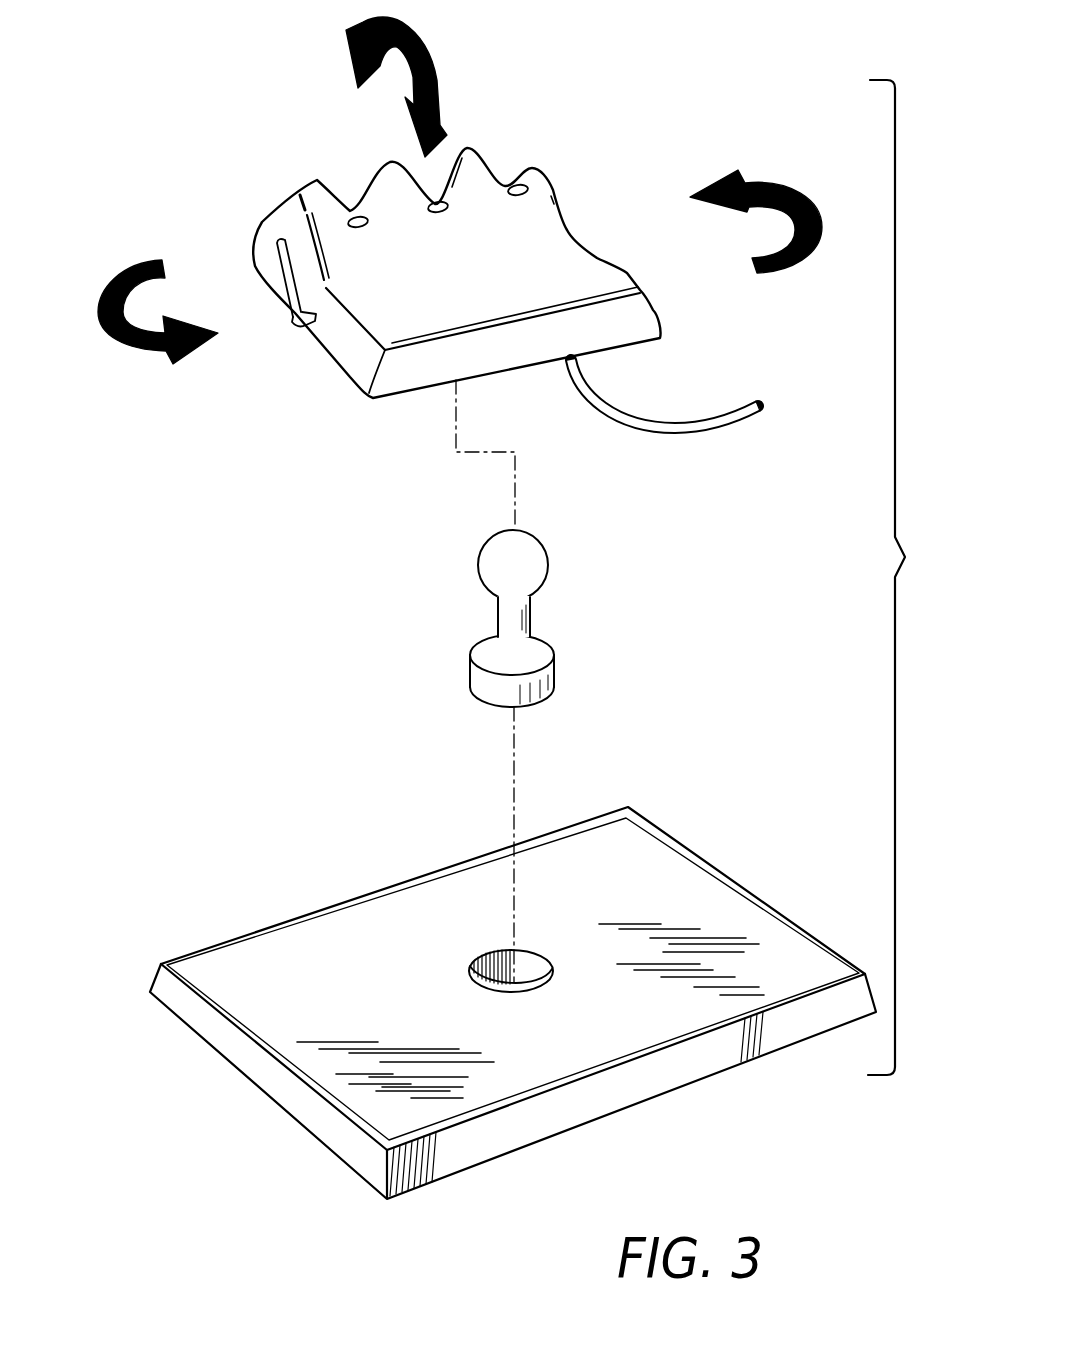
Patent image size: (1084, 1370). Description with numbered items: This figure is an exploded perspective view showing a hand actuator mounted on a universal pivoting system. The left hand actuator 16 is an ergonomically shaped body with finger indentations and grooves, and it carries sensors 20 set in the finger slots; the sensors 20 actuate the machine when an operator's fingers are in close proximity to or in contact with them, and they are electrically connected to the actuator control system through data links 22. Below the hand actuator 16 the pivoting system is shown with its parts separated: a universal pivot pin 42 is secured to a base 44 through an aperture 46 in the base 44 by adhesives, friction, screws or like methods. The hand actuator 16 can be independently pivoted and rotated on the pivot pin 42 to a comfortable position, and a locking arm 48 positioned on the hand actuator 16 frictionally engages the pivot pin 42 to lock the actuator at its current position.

The left hand actuator 16 is at (557, 202).
The sensors 20 is at (357, 215).
The data links 22 is at (649, 428).
The universal pivot pin 42 is at (531, 557).
The base 44 is at (685, 867).
The aperture 46 is at (528, 970).
The locking arm 48 is at (298, 326).